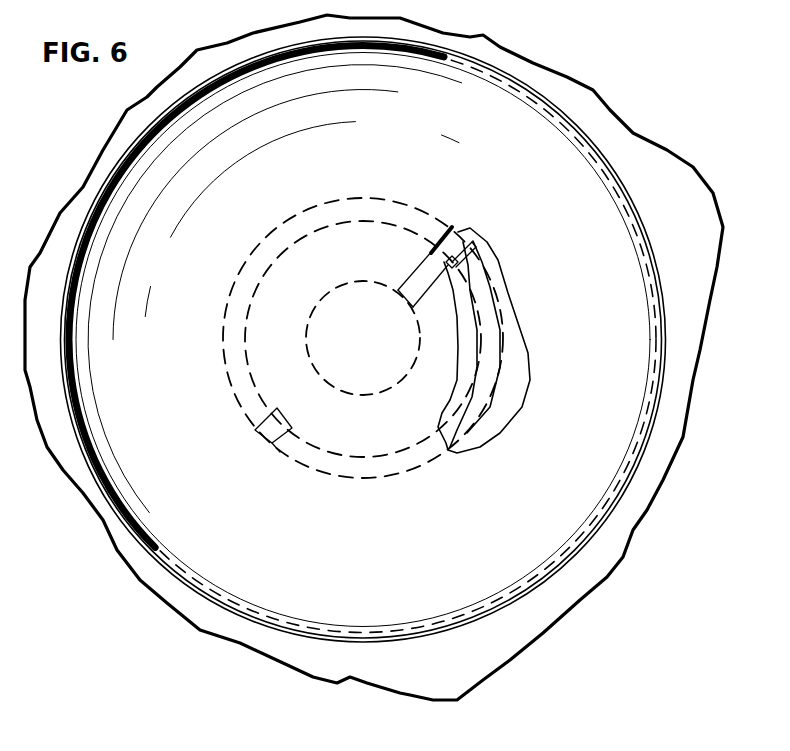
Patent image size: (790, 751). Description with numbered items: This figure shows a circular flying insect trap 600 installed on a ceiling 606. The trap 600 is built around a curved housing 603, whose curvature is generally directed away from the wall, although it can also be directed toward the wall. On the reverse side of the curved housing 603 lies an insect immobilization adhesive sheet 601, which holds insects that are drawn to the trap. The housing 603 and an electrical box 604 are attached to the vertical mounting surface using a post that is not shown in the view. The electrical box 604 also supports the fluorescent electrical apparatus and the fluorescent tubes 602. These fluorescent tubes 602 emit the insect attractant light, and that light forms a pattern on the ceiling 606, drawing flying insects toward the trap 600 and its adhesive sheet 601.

The trap 600 is at (152, 560).
The insect immobilization adhesive sheet 601 is at (419, 612).
The fluorescent tubes 602 is at (474, 409).
The curved housing 603 is at (625, 240).
The electrical box 604 is at (347, 312).
The ceiling 606 is at (620, 528).